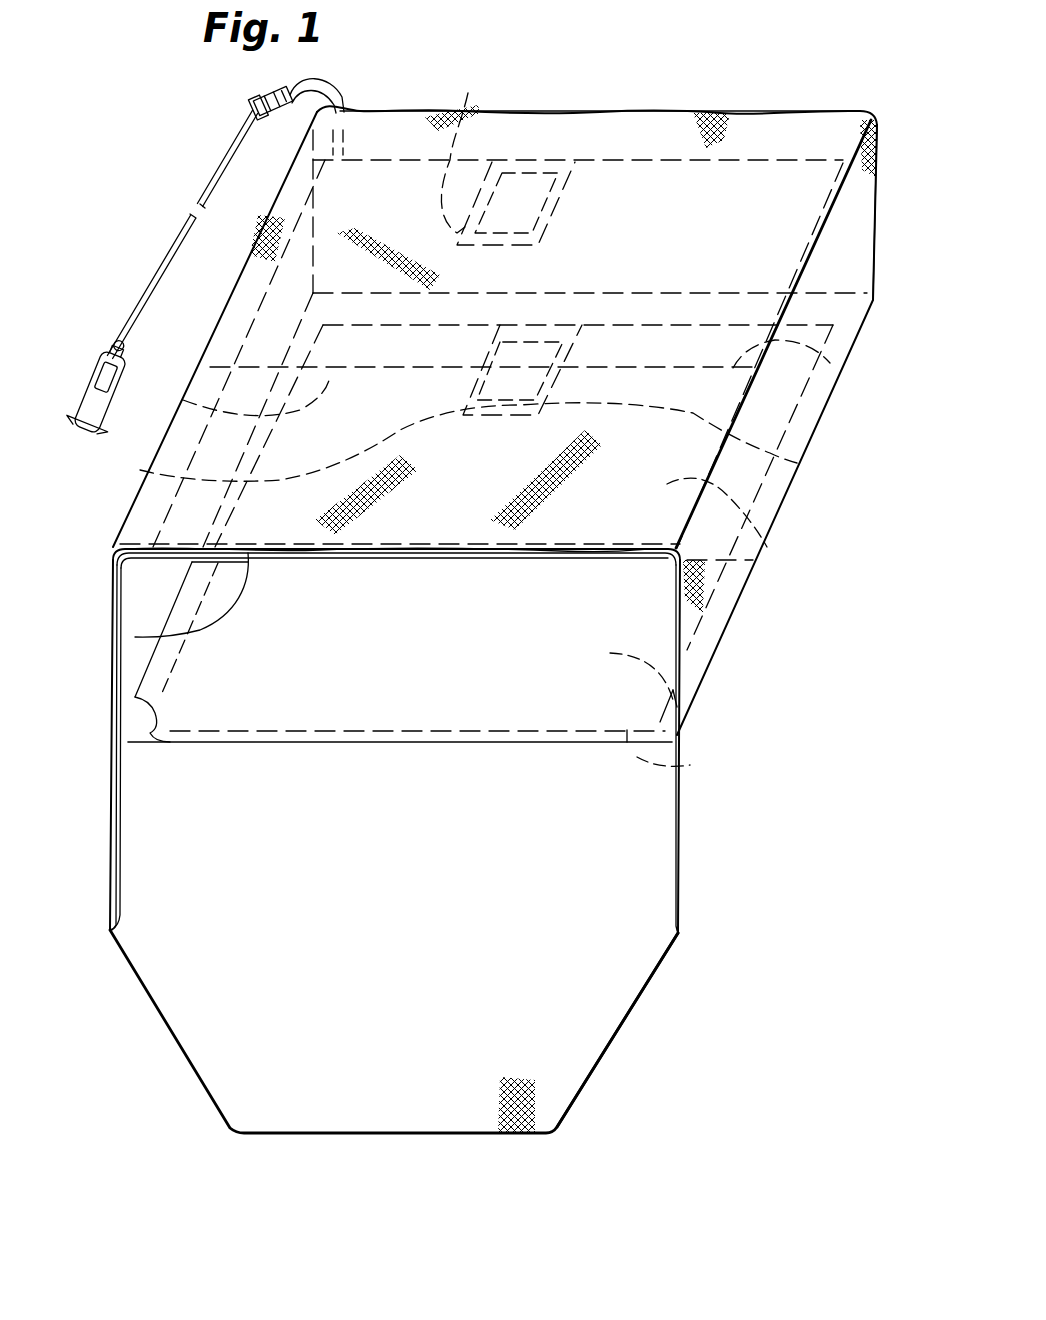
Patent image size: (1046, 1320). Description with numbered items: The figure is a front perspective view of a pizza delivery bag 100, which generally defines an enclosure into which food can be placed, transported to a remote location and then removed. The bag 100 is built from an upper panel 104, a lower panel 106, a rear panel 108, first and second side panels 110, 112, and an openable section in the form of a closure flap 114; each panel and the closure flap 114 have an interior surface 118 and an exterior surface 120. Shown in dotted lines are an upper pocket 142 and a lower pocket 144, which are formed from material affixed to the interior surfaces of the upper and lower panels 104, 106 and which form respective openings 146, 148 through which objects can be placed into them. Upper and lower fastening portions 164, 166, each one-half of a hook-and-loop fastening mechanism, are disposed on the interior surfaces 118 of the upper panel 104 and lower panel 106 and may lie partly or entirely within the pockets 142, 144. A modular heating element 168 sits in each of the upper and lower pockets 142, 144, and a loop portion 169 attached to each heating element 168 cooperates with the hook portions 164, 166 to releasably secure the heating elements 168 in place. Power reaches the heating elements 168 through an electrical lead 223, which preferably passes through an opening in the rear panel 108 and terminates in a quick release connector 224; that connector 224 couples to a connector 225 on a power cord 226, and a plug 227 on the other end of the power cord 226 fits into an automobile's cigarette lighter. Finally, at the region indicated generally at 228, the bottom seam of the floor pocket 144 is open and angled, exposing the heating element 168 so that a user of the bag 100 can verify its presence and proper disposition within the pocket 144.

The pizza delivery bag 100 is at (762, 634).
The upper panel 104 is at (843, 113).
The lower panel 106 is at (750, 462).
The rear panel 108 is at (863, 220).
The first side panel 110 is at (130, 568).
The second side panel 112 is at (835, 376).
The closure flap 114 is at (650, 1000).
The interior surface 118 is at (921, 338).
The exterior surface 120 is at (643, 128).
The upper pocket 142 is at (767, 547).
The lower pocket 144 is at (677, 707).
The opening 146 is at (830, 363).
The opening 148 is at (135, 637).
The upper fastening portion 164 is at (555, 172).
The lower fastening portion 166 is at (147, 470).
The modular heating element 168 is at (760, 158).
The loop portion 169 is at (468, 93).
The electrical lead 223 is at (205, 170).
The quick release connector 224 is at (265, 90).
The connector 225 is at (257, 98).
The power cord 226 is at (160, 277).
The plug 227 is at (87, 387).
The open angled bottom seam 228 is at (174, 710).